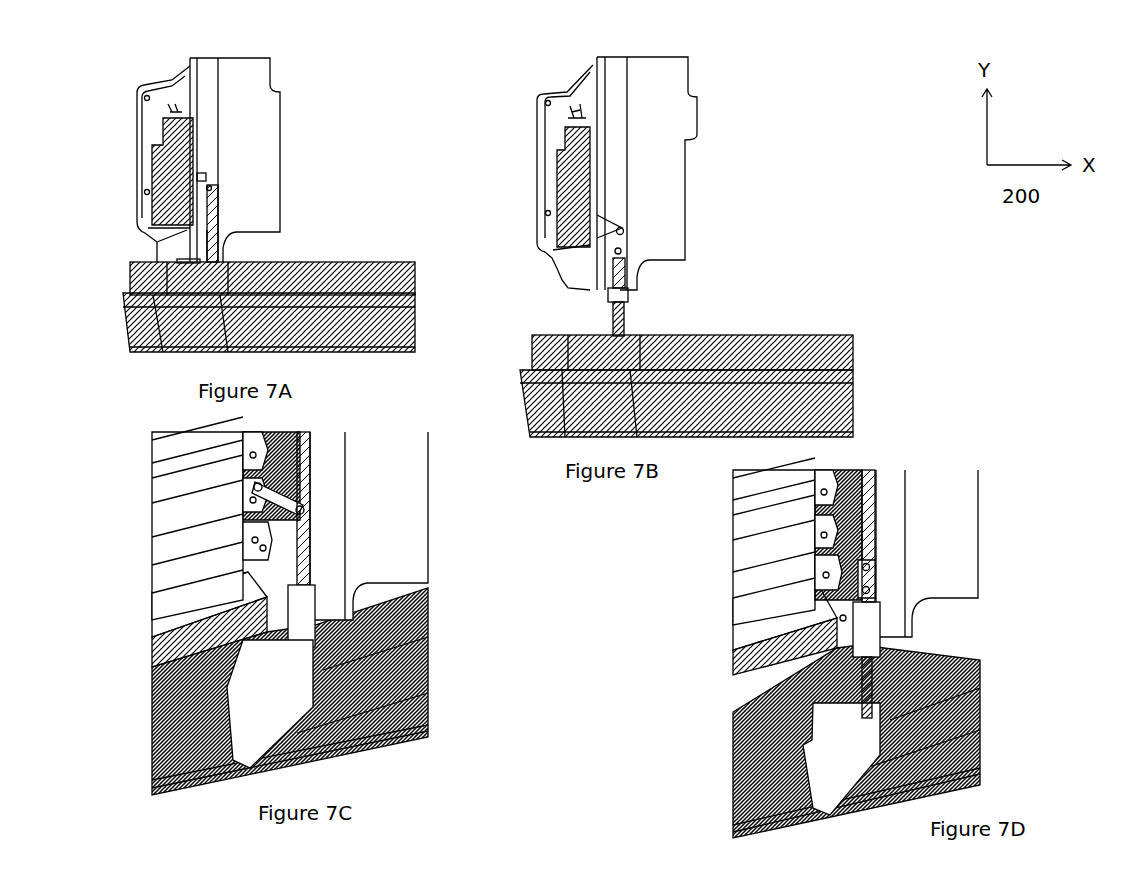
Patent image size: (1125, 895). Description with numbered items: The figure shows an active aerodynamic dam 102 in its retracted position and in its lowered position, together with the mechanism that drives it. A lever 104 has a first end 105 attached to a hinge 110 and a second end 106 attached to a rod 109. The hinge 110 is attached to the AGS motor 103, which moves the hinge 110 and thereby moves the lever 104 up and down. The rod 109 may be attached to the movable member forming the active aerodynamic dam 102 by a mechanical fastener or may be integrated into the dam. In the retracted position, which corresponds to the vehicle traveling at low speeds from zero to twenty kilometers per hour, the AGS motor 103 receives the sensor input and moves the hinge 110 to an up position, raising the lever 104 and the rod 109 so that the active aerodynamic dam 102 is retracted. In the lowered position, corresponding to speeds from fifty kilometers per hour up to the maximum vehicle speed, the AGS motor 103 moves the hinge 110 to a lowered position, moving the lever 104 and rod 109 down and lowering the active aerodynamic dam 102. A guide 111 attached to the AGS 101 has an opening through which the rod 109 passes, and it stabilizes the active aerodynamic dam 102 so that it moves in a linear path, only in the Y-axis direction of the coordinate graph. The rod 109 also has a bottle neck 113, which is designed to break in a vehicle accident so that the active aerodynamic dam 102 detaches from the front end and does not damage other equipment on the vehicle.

In FIG. 7A, the AGS 101 is at (252, 139).
In FIG. 7B, the AGS 101 is at (668, 117).
In FIG. 7C, the AGS 101 is at (403, 515).
In FIG. 7D, the AGS 101 is at (938, 577).
In FIG. 7A, the active aerodynamic dam 102 is at (155, 322).
In FIG. 7B, the active aerodynamic dam 102 is at (782, 360).
In FIG. 7C, the active aerodynamic dam 102 is at (172, 692).
In FIG. 7D, the active aerodynamic dam 102 is at (758, 718).
In FIG. 7A, the AGS motor 103 is at (168, 166).
In FIG. 7B, the AGS motor 103 is at (573, 170).
In FIG. 7C, the AGS motor 103 is at (245, 490).
In FIG. 7D, the AGS motor 103 is at (850, 510).
In FIG. 7A, the lever 104 is at (203, 178).
In FIG. 7B, the lever 104 is at (624, 233).
In FIG. 7C, the lever 104 is at (298, 502).
In FIG. 7D, the lever 104 is at (875, 563).
In FIG. 7A, the first end 105 is at (197, 174).
In FIG. 7B, the first end 105 is at (620, 227).
In FIG. 7C, the first end 105 is at (268, 533).
In FIG. 7D, the first end 105 is at (832, 582).
In FIG. 7A, the second end 106 is at (209, 189).
In FIG. 7B, the second end 106 is at (618, 253).
In FIG. 7C, the second end 106 is at (263, 549).
In FIG. 7D, the second end 106 is at (843, 620).
In FIG. 7A, the rod 109 is at (215, 218).
In FIG. 7B, the rod 109 is at (628, 313).
In FIG. 7C, the rod 109 is at (312, 608).
In FIG. 7D, the rod 109 is at (872, 702).
In FIG. 7B, the hinge 110 is at (605, 213).
In FIG. 7C, the hinge 110 is at (262, 566).
In FIG. 7D, the hinge 110 is at (820, 543).
In FIG. 7C, the guide 111 is at (302, 620).
In FIG. 7D, the guide 111 is at (868, 620).
In FIG. 7A, the bottle neck 113 is at (210, 233).
In FIG. 7B, the bottle neck 113 is at (613, 297).
In FIG. 7D, the bottle neck 113 is at (860, 660).